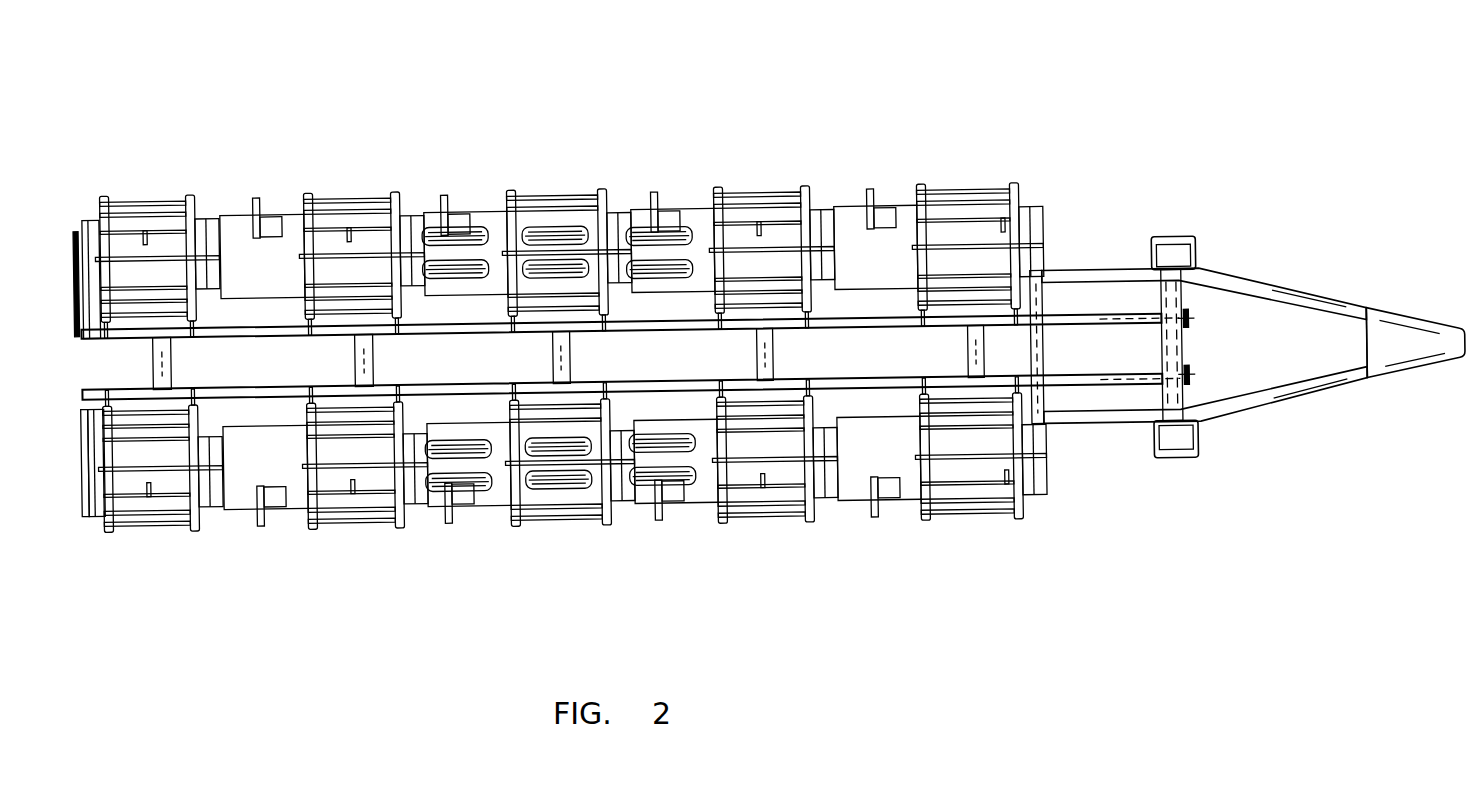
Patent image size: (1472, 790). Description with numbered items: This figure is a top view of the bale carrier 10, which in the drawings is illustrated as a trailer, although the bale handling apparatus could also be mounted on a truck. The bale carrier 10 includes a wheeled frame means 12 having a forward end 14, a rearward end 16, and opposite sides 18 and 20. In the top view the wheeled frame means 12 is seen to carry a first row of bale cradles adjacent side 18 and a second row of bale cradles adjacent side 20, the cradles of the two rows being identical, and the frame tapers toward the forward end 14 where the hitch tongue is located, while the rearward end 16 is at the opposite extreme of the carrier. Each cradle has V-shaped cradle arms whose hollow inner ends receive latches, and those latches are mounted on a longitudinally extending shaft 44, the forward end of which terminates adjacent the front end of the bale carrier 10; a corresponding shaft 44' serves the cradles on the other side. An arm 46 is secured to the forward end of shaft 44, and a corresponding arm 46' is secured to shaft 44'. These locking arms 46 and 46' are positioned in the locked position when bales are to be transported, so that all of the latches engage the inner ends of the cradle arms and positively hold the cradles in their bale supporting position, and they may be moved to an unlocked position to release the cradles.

The bale carrier 10 is at (1000, 126).
The wheeled frame means 12 is at (1119, 262).
The forward end 14 is at (1422, 308).
The rearward end 16 is at (70, 310).
The side 18 is at (583, 175).
The side 20 is at (567, 533).
The longitudinally extending shaft 44 is at (630, 287).
The longitudinally extending shaft 44' is at (631, 416).
The locking arm 46 is at (1217, 318).
The locking arm 46' is at (1220, 358).